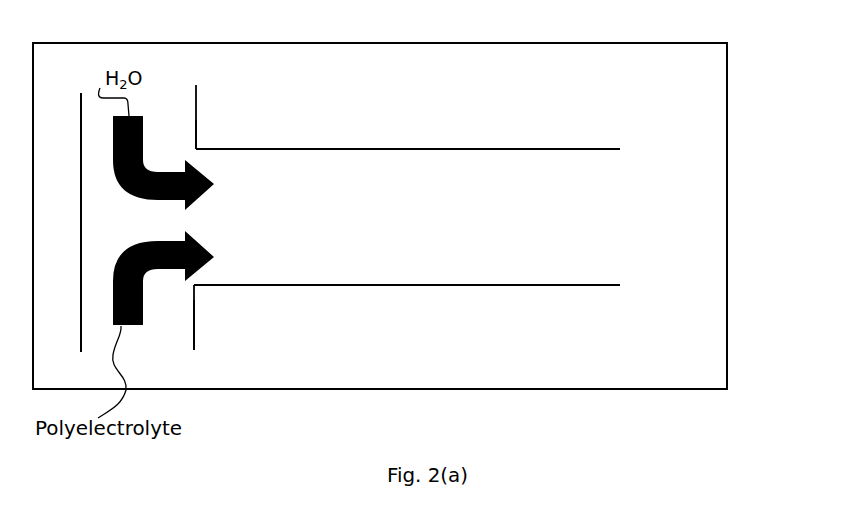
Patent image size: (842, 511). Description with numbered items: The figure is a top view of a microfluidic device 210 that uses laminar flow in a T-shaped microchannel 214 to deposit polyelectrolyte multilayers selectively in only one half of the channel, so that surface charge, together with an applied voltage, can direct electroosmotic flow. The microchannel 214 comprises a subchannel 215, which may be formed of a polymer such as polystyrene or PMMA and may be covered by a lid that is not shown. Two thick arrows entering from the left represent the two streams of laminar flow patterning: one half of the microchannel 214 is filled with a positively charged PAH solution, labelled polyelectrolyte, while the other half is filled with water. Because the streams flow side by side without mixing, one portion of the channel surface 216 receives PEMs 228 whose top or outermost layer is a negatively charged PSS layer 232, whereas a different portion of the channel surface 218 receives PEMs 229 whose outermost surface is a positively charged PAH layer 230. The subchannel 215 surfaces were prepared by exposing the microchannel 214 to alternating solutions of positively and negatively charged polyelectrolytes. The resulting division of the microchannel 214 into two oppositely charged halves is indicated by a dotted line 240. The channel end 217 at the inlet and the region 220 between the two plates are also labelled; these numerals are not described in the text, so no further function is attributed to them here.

The microfluidic device 210 is at (594, 402).
The microchannel 214 is at (288, 336).
The subchannel 215 is at (302, 148).
The channel surface portion 216 is at (408, 148).
The upper plate inlet end 217 is at (196, 97).
The channel surface portion 218 is at (433, 285).
The channel between plates 220 is at (579, 194).
The PEMs 228 is at (196, 129).
The PEMs 229 is at (194, 325).
The PAH layer 230 is at (290, 285).
The PSS layer 232 is at (473, 148).
The dotted line 240 is at (582, 213).